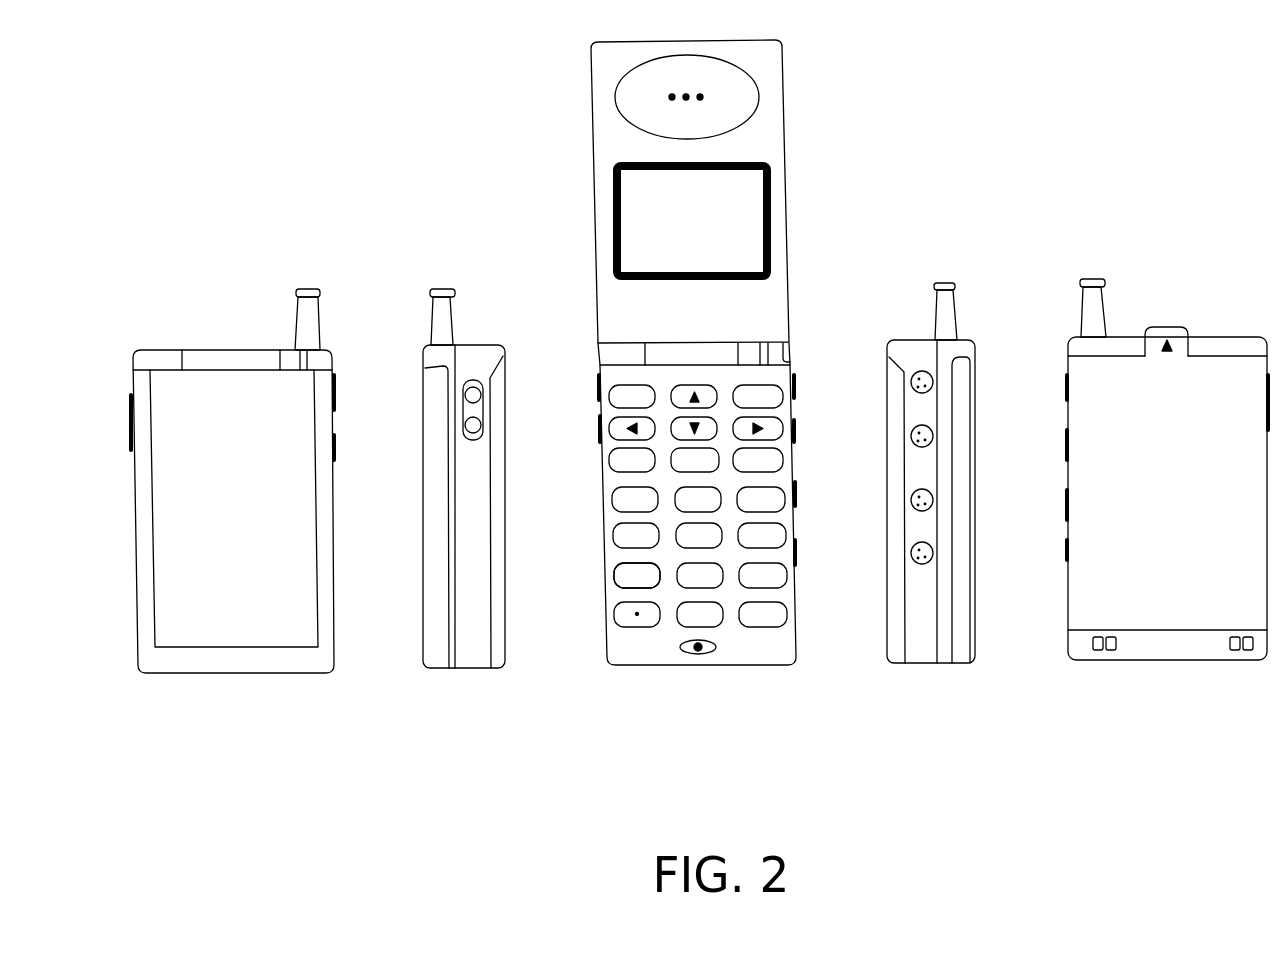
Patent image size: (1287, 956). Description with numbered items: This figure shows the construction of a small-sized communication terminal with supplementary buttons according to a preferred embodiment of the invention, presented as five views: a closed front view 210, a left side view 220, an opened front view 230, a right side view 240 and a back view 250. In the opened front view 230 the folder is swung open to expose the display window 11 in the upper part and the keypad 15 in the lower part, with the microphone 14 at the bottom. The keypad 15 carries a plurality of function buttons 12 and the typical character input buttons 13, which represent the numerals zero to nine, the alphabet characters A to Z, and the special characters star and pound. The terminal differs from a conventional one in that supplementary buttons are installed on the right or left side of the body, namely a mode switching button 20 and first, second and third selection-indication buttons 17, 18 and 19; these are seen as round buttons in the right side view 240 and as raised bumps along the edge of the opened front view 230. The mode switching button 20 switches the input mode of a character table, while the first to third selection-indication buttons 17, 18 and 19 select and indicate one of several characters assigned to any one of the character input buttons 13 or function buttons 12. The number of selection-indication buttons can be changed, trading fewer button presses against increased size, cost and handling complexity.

The display window 11 is at (723, 207).
The function buttons 12 is at (598, 421).
The character input buttons 13 is at (603, 492).
The microphone 14 is at (769, 633).
The keypad 15 is at (607, 582).
The first selection-indication button 17 is at (795, 385).
The second selection-indication button 18 is at (795, 448).
The third selection-indication button 19 is at (796, 504).
The mode switching button 20 is at (797, 556).
The closed front view 210 is at (337, 720).
The left side view 220 is at (550, 715).
The opened front view 230 is at (689, 425).
The right side view 240 is at (855, 710).
The back view 250 is at (1075, 712).